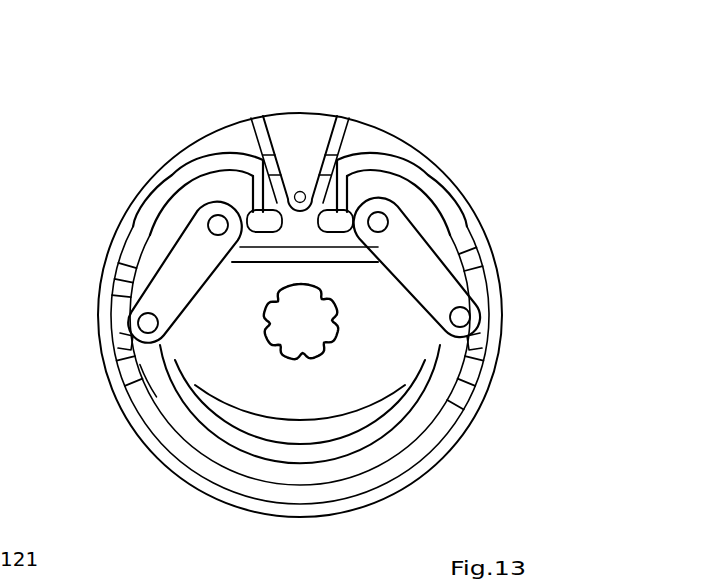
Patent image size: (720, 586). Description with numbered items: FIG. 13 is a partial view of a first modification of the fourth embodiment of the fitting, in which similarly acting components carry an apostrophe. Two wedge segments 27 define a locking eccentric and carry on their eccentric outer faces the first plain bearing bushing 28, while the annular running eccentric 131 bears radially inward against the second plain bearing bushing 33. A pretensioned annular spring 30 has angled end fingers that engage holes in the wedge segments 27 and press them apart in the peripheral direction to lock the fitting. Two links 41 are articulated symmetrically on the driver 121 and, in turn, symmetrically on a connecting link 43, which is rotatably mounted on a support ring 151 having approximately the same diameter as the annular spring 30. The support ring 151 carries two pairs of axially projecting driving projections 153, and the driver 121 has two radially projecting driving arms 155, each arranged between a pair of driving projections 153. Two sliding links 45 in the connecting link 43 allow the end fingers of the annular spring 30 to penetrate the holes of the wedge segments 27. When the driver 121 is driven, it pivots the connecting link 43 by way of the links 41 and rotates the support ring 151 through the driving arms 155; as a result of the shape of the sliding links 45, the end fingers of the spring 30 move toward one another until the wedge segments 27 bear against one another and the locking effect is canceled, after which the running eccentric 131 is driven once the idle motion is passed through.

The wedge segments 27 is at (268, 150).
The first plain bearing bushing 28 is at (367, 437).
The annular spring 30 is at (410, 150).
The second plain bearing bushing 33 is at (437, 425).
The links 41 is at (294, 263).
The connecting link 43 is at (390, 348).
The sliding links 45 is at (288, 337).
The driver 121 is at (117, 426).
The running eccentric 131 is at (238, 283).
The support ring 151 is at (311, 139).
The driving projections 153 is at (296, 357).
The driving arms 155 is at (286, 335).